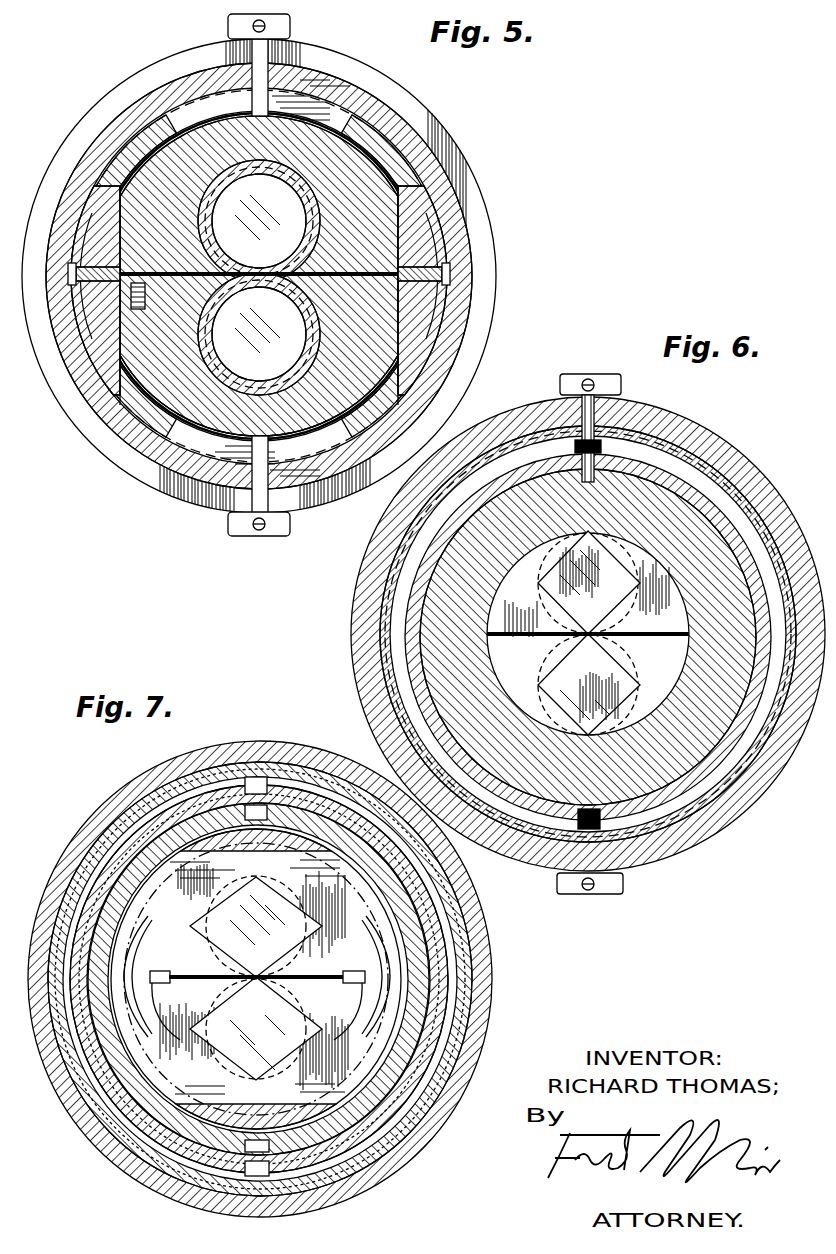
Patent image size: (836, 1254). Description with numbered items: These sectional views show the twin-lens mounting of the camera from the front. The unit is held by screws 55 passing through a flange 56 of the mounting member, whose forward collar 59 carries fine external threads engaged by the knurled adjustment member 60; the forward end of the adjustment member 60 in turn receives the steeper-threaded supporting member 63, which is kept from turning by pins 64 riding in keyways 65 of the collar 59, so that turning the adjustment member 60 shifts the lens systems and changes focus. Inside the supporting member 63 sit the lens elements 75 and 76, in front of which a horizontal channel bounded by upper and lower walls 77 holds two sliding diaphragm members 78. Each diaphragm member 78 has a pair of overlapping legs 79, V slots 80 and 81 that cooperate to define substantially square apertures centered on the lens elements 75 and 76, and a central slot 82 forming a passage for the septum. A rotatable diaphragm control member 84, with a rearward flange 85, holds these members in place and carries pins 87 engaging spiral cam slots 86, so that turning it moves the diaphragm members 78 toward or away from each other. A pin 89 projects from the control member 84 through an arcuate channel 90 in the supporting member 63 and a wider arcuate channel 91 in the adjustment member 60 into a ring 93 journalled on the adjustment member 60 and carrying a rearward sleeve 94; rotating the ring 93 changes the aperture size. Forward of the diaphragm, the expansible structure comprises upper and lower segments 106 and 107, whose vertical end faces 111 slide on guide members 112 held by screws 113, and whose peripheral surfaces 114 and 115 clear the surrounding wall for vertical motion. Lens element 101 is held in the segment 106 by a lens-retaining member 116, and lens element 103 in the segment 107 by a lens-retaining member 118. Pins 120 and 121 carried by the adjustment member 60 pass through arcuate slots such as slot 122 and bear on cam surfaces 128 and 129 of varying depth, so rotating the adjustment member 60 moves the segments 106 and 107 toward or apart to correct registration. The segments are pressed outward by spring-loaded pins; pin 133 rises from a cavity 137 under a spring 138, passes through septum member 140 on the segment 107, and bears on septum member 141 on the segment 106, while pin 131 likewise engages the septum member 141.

In FIG. 5, the screws 55 is at (287, 534).
In FIG. 6, the screws 55 is at (600, 378).
In FIG. 5, the flange 56 is at (260, 542).
In FIG. 6, the flange 56 is at (612, 390).
In FIG. 7, the collar 59 is at (440, 1042).
In FIG. 6, the adjustment member 60 is at (372, 642).
In FIG. 7, the adjustment member 60 is at (468, 1027).
In FIG. 6, the supporting member 63 is at (402, 666).
In FIG. 7, the supporting member 63 is at (420, 1092).
In FIG. 6, the pins 64 is at (603, 446).
In FIG. 6, the keyways or slots 65 is at (566, 880).
In FIG. 7, the keyways or slots 65 is at (254, 777).
In FIG. 6, the lens element 75 is at (630, 577).
In FIG. 6, the lens element 76 is at (615, 692).
In FIG. 7, the upper and lower walls 77 is at (188, 852).
In FIG. 6, the diaphragm members 78 is at (658, 602).
In FIG. 7, the diaphragm members 78 is at (145, 1074).
In FIG. 7, the legs 79 is at (230, 890).
In FIG. 6, the V slot 80 is at (589, 582).
In FIG. 7, the V slot 80 is at (256, 926).
In FIG. 6, the V slot 81 is at (589, 684).
In FIG. 7, the V slot 81 is at (256, 1028).
In FIG. 7, the slot 82 is at (257, 1012).
In FIG. 6, the diaphragm control member 84 is at (440, 604).
In FIG. 7, the rearward extending flange 85 is at (422, 955).
In FIG. 7, the cam slot 86 is at (360, 927).
In FIG. 7, the pins 87 is at (257, 969).
In FIG. 6, the pin 89 is at (605, 427).
In FIG. 7, the pin 89 is at (283, 785).
In FIG. 6, the arcuate channel 90 is at (688, 484).
In FIG. 7, the arcuate channel 90 is at (345, 824).
In FIG. 6, the arcuate channel 91 is at (712, 472).
In FIG. 7, the arcuate channel 91 is at (150, 792).
In FIG. 5, the ring 93 is at (470, 355).
In FIG. 6, the ring 93 is at (690, 472).
In FIG. 7, the sleeve 94 is at (458, 970).
In FIG. 5, the lens element 101 is at (250, 220).
In FIG. 5, the lens element 103 is at (250, 340).
In FIG. 5, the segment 106 is at (372, 188).
In FIG. 5, the segment 107 is at (445, 370).
In FIG. 5, the end faces 111 is at (110, 237).
In FIG. 5, the guide members 112 is at (425, 247).
In FIG. 5, the screws 113 is at (88, 264).
In FIG. 5, the peripheral surface 114 is at (330, 118).
In FIG. 5, the peripheral surface 115 is at (210, 494).
In FIG. 5, the lens-retaining member 116 is at (330, 224).
In FIG. 5, the lens-retaining member 118 is at (338, 351).
In FIG. 5, the pin 120 is at (290, 57).
In FIG. 5, the pin 121 is at (245, 534).
In FIG. 5, the arcuate slot 122 is at (150, 190).
In FIG. 5, the cam surface 128 is at (230, 127).
In FIG. 5, the cam surface 129 is at (300, 507).
In FIG. 5, the pin 131 is at (462, 319).
In FIG. 5, the pin 133 is at (85, 284).
In FIG. 5, the cavity 137 is at (140, 311).
In FIG. 5, the spring 138 is at (112, 354).
In FIG. 5, the septum member 140 is at (175, 269).
In FIG. 6, the septum member 140 is at (537, 658).
In FIG. 7, the septum member 140 is at (225, 1003).
In FIG. 5, the septum member 141 is at (378, 270).
In FIG. 6, the septum member 141 is at (531, 634).
In FIG. 7, the septum member 141 is at (292, 962).